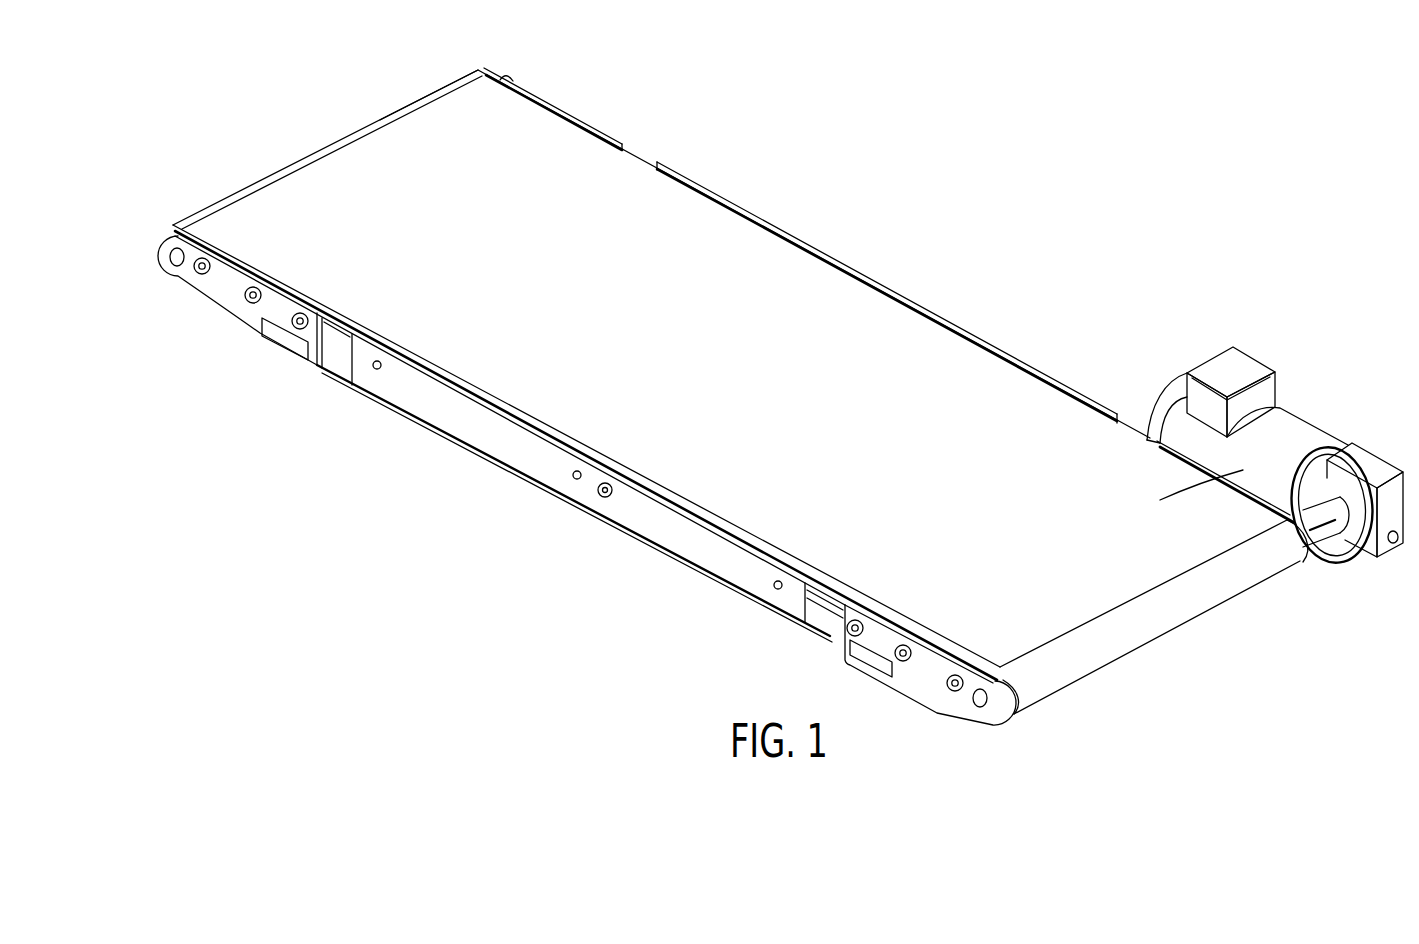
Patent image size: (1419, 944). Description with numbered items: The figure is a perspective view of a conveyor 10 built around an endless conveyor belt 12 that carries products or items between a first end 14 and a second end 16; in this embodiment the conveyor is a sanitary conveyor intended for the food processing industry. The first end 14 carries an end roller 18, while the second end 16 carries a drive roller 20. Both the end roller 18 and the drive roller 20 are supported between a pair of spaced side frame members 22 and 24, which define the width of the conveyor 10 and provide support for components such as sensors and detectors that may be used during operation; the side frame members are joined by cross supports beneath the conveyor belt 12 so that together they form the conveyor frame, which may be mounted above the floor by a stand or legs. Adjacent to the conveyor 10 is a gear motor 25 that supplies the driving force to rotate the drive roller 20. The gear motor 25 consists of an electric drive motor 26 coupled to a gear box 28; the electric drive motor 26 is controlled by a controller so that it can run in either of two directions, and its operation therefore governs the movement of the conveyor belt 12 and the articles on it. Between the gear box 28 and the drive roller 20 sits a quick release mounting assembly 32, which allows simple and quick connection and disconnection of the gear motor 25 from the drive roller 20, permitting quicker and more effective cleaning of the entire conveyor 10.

The conveyor 10 is at (790, 219).
The endless conveyor belt 12 is at (318, 178).
The first end 14 is at (418, 100).
The second end 16 is at (1088, 672).
The end roller 18 is at (175, 223).
The drive roller 20 is at (1008, 683).
The side frame member 22 is at (488, 438).
The side frame member 24 is at (935, 318).
The gear motor 25 is at (1309, 409).
The electric drive motor 26 is at (1257, 443).
The gear box 28 is at (1353, 460).
The quick release mounting assembly 32 is at (1336, 560).